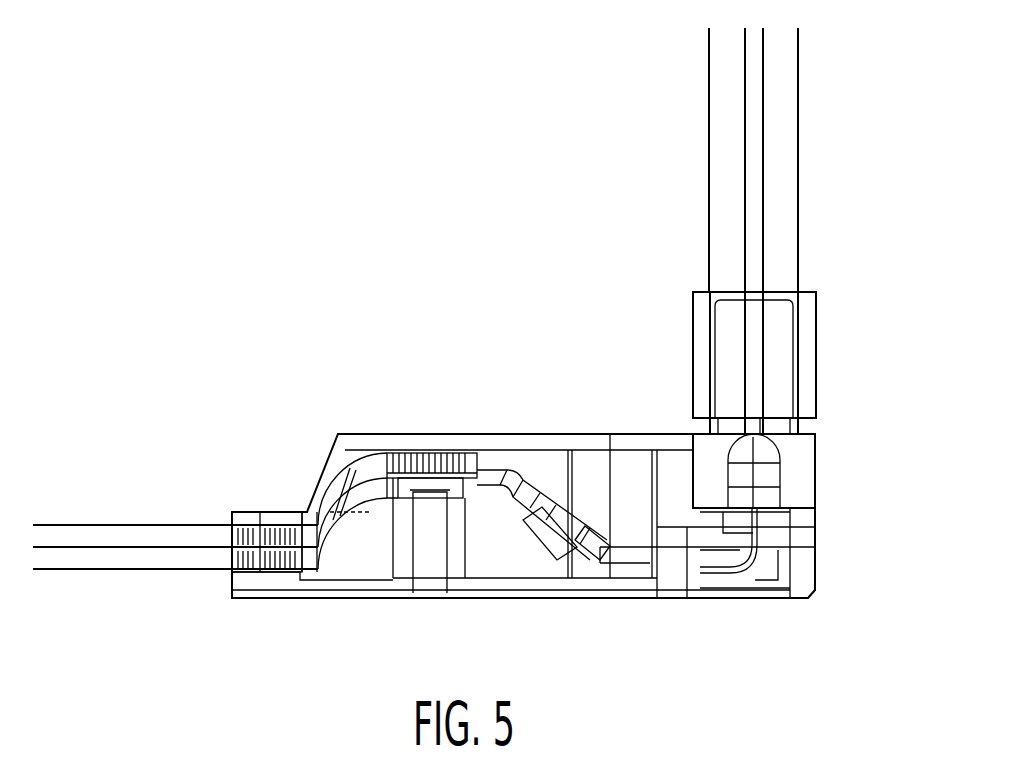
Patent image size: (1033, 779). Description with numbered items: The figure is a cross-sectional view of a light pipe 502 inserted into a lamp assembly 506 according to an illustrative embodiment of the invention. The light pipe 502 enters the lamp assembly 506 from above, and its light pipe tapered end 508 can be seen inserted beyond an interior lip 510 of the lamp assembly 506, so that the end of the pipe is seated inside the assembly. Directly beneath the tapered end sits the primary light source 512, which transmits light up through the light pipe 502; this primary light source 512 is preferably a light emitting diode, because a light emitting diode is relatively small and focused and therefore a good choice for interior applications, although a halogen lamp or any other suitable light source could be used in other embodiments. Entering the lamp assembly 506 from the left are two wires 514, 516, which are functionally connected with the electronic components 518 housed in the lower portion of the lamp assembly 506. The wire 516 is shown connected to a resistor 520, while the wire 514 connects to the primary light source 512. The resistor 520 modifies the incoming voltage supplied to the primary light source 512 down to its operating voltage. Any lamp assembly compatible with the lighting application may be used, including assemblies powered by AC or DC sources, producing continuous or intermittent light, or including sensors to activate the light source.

The light pipe 502 is at (709, 143).
The lamp assembly 506 is at (500, 432).
The light pipe tapered end 508 is at (815, 432).
The interior lip 510 is at (693, 412).
The primary light source 512 is at (740, 457).
The wire 514 is at (178, 537).
The wire 516 is at (178, 562).
The electronic components 518 is at (483, 540).
The resistor 520 is at (549, 538).